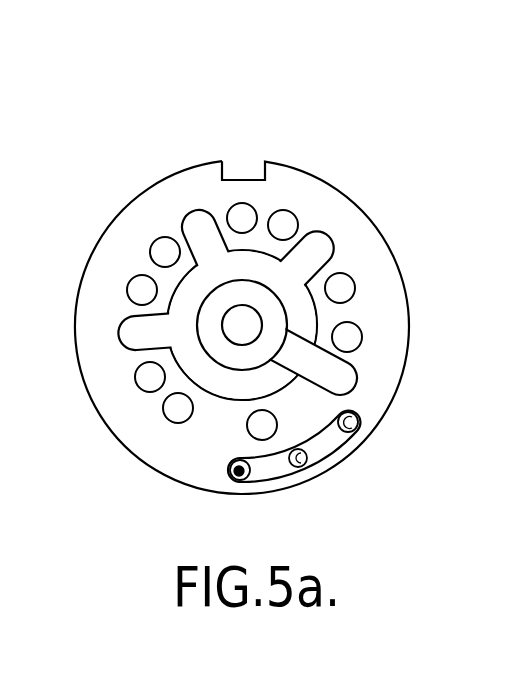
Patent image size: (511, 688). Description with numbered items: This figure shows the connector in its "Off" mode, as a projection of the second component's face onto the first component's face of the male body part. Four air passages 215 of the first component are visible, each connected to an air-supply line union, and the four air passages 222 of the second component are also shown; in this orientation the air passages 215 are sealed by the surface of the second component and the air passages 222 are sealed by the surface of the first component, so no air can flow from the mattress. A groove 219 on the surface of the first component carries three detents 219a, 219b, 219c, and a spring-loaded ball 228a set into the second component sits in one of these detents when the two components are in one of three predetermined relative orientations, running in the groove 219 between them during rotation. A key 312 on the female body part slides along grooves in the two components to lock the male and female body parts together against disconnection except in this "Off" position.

The key 312 is at (250, 172).
The air passage 215 is at (158, 238).
The air passage 222 is at (298, 220).
The groove 219 is at (333, 456).
The detent 219a is at (266, 485).
The detent 219b is at (313, 470).
The detent 219c is at (362, 413).
The ball 228a is at (232, 483).